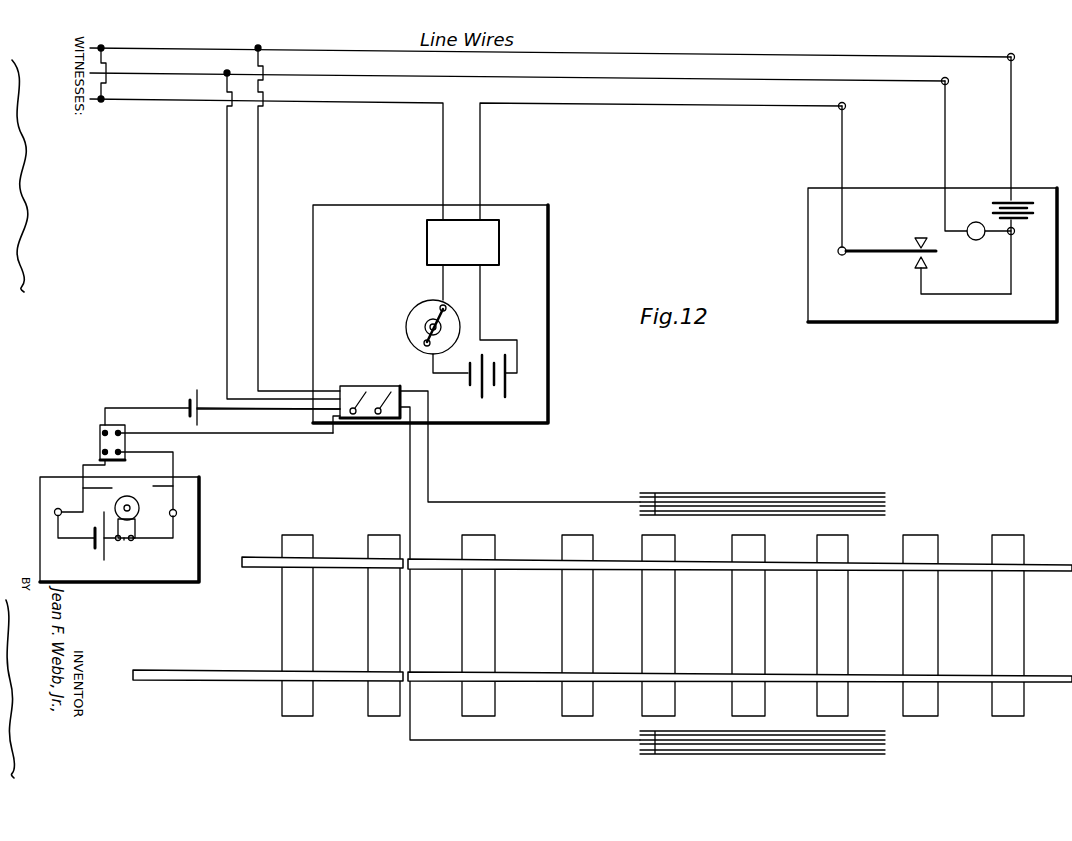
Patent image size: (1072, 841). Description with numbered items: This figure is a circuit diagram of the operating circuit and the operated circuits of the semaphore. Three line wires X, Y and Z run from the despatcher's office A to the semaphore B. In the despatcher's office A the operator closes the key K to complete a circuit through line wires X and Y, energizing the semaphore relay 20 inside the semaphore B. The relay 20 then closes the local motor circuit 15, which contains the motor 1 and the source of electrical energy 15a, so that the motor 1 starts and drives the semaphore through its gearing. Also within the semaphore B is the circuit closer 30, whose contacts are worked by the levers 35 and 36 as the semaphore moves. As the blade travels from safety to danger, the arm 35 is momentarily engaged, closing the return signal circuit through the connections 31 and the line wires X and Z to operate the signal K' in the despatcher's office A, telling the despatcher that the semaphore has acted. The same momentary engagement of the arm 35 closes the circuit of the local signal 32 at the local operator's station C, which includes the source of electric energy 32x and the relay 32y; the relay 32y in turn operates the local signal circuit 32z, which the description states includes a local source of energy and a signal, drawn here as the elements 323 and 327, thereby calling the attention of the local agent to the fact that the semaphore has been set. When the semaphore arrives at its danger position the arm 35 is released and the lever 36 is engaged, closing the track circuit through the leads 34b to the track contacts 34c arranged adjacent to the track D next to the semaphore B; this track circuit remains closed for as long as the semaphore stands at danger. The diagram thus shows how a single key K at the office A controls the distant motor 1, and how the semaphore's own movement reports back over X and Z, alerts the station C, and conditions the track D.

The motor 1 is at (437, 319).
The local motor circuit 15 is at (493, 331).
The source of electrical energy 15a is at (507, 382).
The semaphore relay 20 is at (463, 242).
The circuit closer 30 is at (298, 400).
The connections 31 is at (227, 280).
The local signal 32 is at (140, 516).
The source of electric energy 32x is at (188, 402).
The relay 32y is at (99, 433).
The local signal circuit 32z is at (128, 488).
The battery 323 is at (96, 550).
The relay coil terminals 327 is at (127, 542).
The leads 34b is at (535, 496).
The track contacts 34c is at (762, 615).
The lever 35 is at (362, 421).
The operating lever 36 is at (387, 420).
The despatcher's office A is at (912, 267).
The semaphore B is at (430, 314).
The local operator's station C is at (147, 527).
The track D is at (602, 625).
The key K is at (924, 261).
The signal K' is at (995, 221).
The line wire X is at (652, 53).
The line wire Y is at (624, 105).
The line wire Z is at (694, 81).